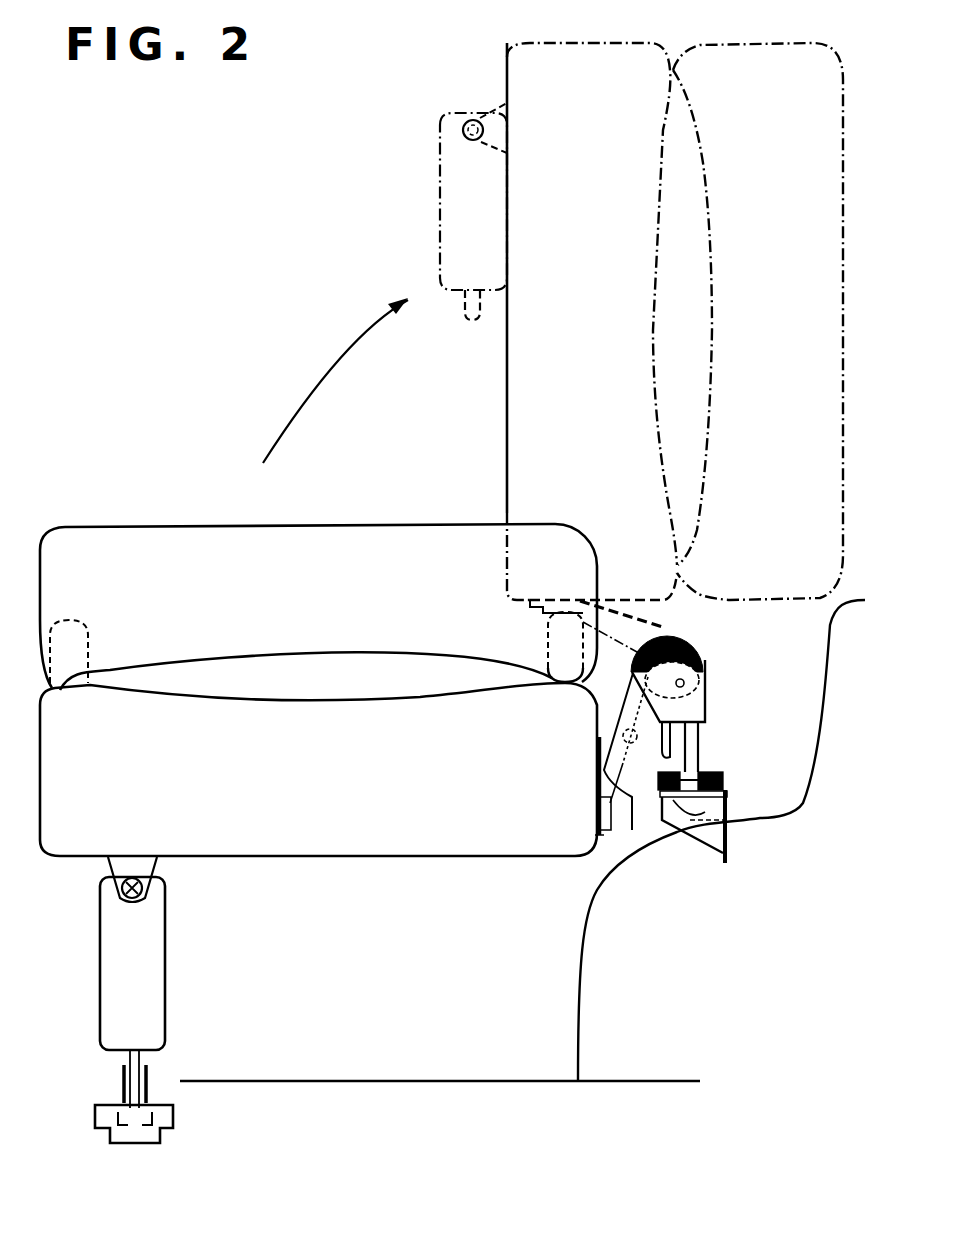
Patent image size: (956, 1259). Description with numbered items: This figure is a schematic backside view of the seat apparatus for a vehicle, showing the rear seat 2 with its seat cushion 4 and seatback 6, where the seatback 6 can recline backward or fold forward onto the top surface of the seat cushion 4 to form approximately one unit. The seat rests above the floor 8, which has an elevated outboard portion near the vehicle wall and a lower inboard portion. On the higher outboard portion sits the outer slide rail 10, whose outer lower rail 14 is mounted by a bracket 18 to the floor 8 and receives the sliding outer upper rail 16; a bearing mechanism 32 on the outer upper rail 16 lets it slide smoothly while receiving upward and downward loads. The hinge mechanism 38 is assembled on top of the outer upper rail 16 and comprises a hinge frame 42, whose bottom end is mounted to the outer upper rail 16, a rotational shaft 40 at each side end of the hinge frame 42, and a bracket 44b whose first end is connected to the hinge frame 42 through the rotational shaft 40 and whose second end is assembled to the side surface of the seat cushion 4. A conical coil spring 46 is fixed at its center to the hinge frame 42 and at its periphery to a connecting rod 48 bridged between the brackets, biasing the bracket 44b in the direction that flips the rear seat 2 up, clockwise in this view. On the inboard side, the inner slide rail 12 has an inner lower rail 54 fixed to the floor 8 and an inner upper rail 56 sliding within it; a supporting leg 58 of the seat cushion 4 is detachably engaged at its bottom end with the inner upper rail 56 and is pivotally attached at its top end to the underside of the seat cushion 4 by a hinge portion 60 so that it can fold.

The rear seat 2 is at (441, 498).
The seat cushion 4 is at (400, 857).
The seatback 6 is at (190, 523).
The floor 8 is at (395, 1080).
The outer slide rail 10 is at (753, 801).
The inner slide rail 12 is at (149, 1030).
The outer lower rail 14 is at (717, 770).
The outer upper rail 16 is at (707, 745).
The bracket 18 is at (703, 847).
The bearing mechanism 32 is at (738, 791).
The hinge mechanism 38 is at (608, 676).
The rotational shaft 40 is at (684, 683).
The hinge frame 42 is at (700, 708).
The bracket 44b is at (632, 830).
The conical coil spring 46 is at (693, 640).
The connecting rod 48 is at (622, 735).
The inner lower rail 54 is at (175, 1118).
The inner upper rail 56 is at (128, 1100).
The supporting leg 58 is at (166, 957).
The hinge portion 60 is at (148, 882).